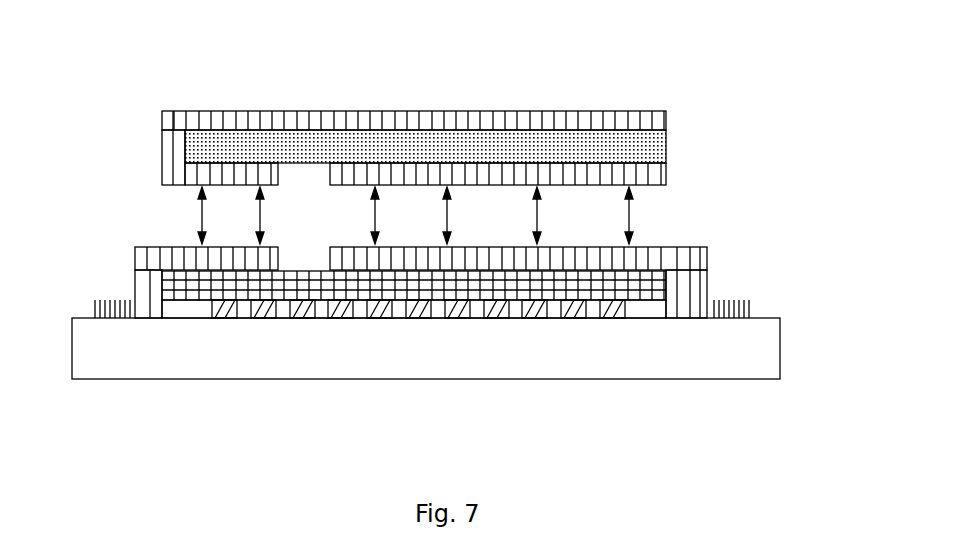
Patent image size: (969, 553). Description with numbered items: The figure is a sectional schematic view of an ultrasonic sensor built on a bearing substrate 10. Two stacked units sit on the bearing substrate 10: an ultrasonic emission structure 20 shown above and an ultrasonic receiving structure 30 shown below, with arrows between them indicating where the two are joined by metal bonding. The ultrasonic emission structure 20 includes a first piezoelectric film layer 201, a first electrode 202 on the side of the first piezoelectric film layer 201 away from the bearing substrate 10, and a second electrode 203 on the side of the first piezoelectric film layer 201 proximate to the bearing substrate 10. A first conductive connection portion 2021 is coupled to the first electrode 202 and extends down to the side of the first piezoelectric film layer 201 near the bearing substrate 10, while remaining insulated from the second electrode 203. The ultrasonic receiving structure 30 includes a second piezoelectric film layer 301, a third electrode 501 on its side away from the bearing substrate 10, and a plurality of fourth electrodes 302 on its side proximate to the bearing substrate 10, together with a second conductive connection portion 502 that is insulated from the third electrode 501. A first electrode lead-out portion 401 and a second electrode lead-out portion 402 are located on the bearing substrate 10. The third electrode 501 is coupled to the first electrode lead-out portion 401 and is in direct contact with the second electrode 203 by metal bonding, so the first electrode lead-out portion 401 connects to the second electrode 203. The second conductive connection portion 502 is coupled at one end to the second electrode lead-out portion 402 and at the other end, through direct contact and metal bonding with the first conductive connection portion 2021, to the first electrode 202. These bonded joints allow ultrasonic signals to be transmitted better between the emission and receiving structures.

The bearing substrate 10 is at (350, 350).
The ultrasonic emission structure 20 is at (403, 103).
The first piezoelectric film layer 201 is at (548, 140).
The first electrode 202 is at (617, 118).
The first conductive connection portion 2021 is at (176, 153).
The second electrode 203 is at (657, 175).
The ultrasonic receiving structure 30 is at (493, 326).
The second piezoelectric film layer 301 is at (641, 298).
The fourth electrodes 302 is at (605, 310).
The first electrode lead-out portion 401 is at (725, 318).
The second electrode lead-out portion 402 is at (110, 300).
The third electrode 501 is at (650, 256).
The second conductive connection portion 502 is at (193, 253).